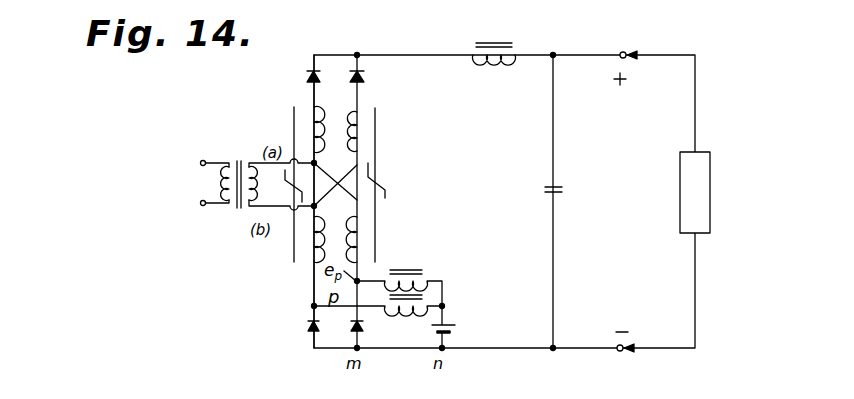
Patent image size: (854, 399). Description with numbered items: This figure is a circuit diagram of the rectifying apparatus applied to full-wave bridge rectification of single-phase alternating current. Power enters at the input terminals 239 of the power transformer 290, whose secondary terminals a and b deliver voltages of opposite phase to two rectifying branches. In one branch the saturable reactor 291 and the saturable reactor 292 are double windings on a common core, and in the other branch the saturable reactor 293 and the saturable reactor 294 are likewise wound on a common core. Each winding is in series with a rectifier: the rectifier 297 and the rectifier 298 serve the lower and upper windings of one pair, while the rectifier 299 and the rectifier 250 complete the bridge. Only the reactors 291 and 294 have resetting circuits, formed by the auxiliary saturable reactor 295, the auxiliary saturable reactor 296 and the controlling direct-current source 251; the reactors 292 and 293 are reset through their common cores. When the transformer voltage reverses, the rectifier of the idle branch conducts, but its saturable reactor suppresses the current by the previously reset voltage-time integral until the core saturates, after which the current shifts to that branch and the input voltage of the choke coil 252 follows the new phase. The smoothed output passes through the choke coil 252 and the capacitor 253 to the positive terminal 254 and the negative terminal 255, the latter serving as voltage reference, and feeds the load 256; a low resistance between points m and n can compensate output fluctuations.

The input terminals 239 is at (182, 184).
The power transformer 290 is at (238, 158).
The saturable reactor 291 is at (364, 238).
The saturable reactor 292 is at (364, 127).
The saturable reactor 293 is at (306, 128).
The saturable reactor 294 is at (306, 238).
The auxiliary saturable reactor 295 is at (413, 273).
The auxiliary saturable reactor 296 is at (425, 298).
The rectifier 297 is at (362, 327).
The rectifier 298 is at (363, 74).
The diode 299 is at (291, 77).
The diode 250 is at (307, 328).
The controlling D.C. power source 251 is at (455, 323).
The choke coil 252 is at (492, 39).
The capacitor 253 is at (562, 185).
The positive output terminal 254 is at (622, 51).
The negative side terminal 255 is at (620, 353).
The load resistor 256 is at (710, 190).